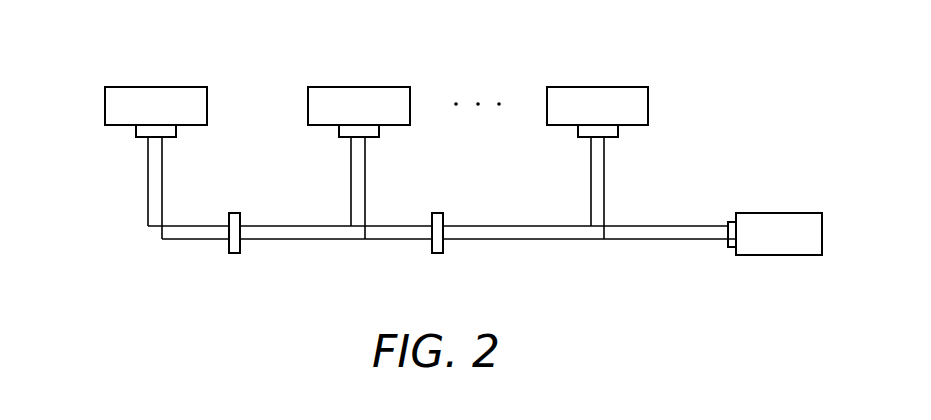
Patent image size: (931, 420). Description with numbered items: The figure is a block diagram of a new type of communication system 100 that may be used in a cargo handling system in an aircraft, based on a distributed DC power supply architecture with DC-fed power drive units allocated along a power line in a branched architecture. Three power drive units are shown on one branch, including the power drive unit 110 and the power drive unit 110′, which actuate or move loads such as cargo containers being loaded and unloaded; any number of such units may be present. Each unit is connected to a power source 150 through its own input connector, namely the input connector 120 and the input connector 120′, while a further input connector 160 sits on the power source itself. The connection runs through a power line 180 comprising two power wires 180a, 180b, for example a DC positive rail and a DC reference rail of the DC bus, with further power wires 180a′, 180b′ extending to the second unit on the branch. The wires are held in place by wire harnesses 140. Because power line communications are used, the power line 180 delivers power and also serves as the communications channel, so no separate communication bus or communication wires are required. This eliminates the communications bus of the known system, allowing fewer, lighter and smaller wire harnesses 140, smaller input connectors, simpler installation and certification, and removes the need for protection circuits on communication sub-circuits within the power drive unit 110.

The communication system 100 is at (104, 58).
The power drive unit 110 is at (175, 87).
The power drive unit 110′ is at (375, 87).
The input connector 120 is at (136, 128).
The input connector 120′ is at (380, 130).
The wire harness 140 is at (234, 255).
The power source 150 is at (795, 257).
The input connector 160 is at (731, 249).
The power line 180 is at (452, 188).
The power wire 180a is at (148, 162).
The power wire 180b is at (162, 190).
The power wire 180a′ is at (351, 170).
The power wire 180b′ is at (365, 198).